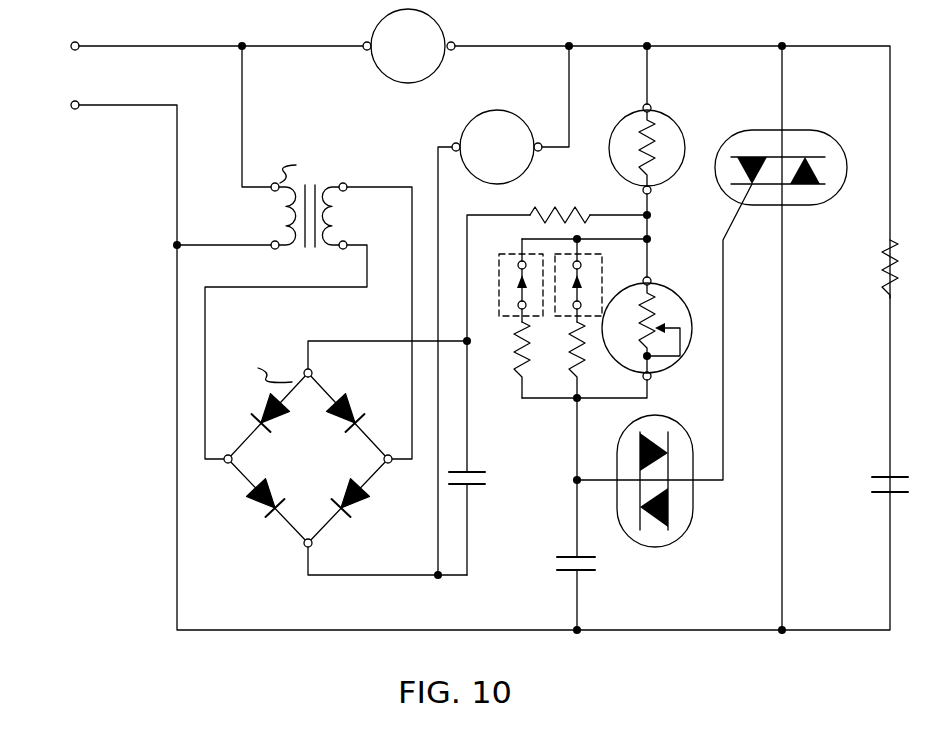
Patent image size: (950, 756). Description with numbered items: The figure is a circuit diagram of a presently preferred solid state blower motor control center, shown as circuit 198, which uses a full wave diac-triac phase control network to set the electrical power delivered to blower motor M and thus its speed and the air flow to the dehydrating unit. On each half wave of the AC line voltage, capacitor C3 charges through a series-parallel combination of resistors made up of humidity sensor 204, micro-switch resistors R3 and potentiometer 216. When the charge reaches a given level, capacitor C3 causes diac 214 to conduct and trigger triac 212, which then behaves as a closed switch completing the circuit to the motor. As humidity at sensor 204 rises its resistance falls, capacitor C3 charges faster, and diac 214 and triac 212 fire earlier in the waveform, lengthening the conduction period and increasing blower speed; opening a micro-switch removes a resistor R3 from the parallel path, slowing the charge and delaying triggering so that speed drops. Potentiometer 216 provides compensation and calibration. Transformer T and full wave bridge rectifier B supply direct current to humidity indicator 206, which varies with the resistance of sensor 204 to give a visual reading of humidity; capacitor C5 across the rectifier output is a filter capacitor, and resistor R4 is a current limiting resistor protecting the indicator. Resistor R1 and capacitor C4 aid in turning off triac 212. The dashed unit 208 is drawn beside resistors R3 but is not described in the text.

The circuit 198 is at (148, 412).
The humidity sensor 204 is at (668, 116).
The humidity indicator 206 is at (510, 110).
The dual photocell / lamp unit 208 is at (557, 253).
The triac 212 is at (806, 130).
The diac 214 is at (650, 548).
The potentiometer 216 is at (663, 378).
The resistor R1 is at (896, 286).
The micro-switch resistors R3 is at (526, 372).
The current limiting resistor R4 is at (545, 207).
The capacitor C3 is at (580, 575).
The capacitor C4 is at (898, 494).
The filter capacitor C5 is at (472, 470).